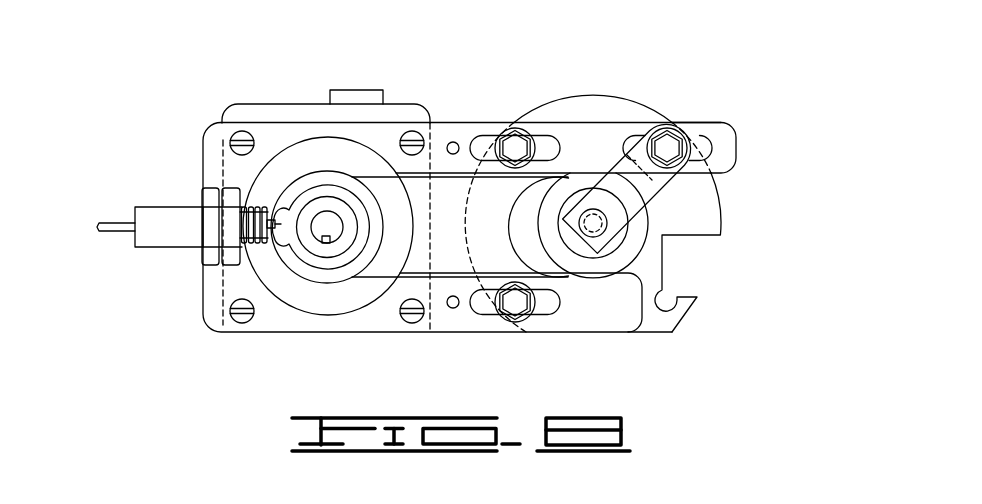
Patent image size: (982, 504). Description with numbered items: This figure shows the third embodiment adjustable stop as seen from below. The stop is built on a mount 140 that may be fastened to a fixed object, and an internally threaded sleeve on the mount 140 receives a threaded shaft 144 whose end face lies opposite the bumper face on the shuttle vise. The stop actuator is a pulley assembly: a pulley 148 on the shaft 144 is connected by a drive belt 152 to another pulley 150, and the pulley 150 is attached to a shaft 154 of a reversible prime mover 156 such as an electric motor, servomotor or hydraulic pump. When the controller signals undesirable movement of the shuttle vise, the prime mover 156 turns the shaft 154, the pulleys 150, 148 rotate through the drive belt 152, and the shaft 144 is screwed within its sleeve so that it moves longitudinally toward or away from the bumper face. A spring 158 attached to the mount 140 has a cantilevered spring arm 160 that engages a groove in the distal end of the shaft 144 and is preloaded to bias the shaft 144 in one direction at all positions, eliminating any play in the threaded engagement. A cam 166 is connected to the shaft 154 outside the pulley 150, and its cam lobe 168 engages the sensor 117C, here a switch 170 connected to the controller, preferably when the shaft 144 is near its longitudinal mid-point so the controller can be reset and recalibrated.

The mount 140 is at (718, 133).
The shaft 144 is at (604, 224).
The pulley 148 is at (618, 260).
The pulley 150 is at (320, 174).
The drive belt 152 is at (463, 175).
The shaft 154 is at (330, 225).
The prime mover 156 is at (270, 112).
The spring 158 is at (625, 170).
The spring arm 160 is at (627, 143).
The cam 166 is at (305, 257).
The cam lobe 168 is at (283, 220).
The switch 170 is at (276, 256).
The sensor 117C is at (177, 250).